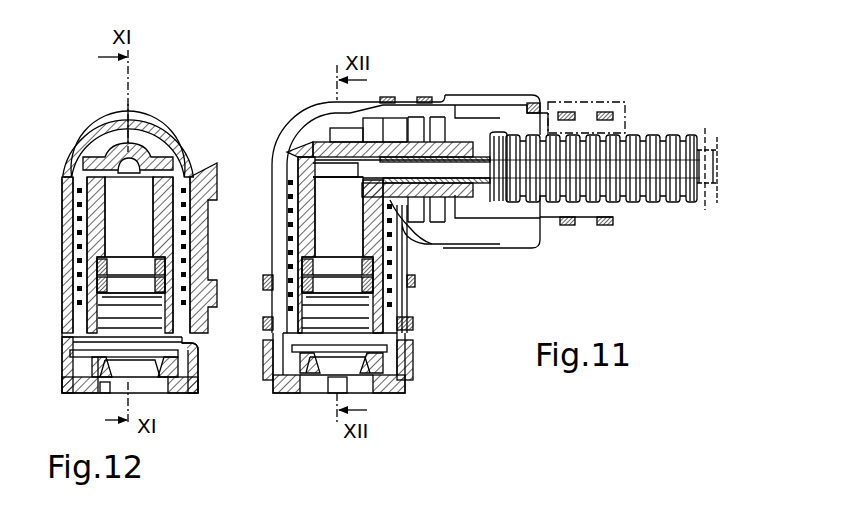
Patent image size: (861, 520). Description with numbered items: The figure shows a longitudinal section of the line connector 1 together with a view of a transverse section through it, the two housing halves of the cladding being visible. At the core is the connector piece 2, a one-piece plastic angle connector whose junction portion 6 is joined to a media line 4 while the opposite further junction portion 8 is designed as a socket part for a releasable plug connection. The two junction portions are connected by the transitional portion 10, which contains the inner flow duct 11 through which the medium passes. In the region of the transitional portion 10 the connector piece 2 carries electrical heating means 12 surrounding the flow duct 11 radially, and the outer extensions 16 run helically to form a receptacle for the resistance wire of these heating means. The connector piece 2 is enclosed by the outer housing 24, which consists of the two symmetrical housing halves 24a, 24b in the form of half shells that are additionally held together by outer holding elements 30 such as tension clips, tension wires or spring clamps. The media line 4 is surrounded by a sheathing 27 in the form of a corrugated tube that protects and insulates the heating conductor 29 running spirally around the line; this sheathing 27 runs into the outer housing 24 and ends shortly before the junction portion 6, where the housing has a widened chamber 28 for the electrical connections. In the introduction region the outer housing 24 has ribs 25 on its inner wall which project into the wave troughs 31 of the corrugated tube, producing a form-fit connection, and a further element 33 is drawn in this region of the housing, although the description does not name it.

In FIG. 12, the line connector 1 is at (187, 92).
In FIG. 11, the line connector 1 is at (453, 62).
In FIG. 12, the connector piece 2 is at (110, 150).
In FIG. 11, the connector piece 2 is at (328, 137).
In FIG. 11, the media line 4 is at (482, 186).
In FIG. 11, the junction portion 6 is at (468, 138).
In FIG. 12, the further junction portion 8 is at (204, 385).
In FIG. 11, the further junction portion 8 is at (284, 386).
In FIG. 12, the transitional portion 10 is at (190, 153).
In FIG. 11, the transitional portion 10 is at (297, 168).
In FIG. 12, the inner flow duct 11 is at (140, 230).
In FIG. 11, the inner flow duct 11 is at (253, 224).
In FIG. 12, the electrical heating means 12 is at (70, 185).
In FIG. 11, the electrical heating means 12 is at (391, 201).
In FIG. 12, the outer extensions 16 is at (203, 273).
In FIG. 11, the outer extensions 16 is at (303, 284).
In FIG. 12, the outer housing 24 is at (188, 127).
In FIG. 11, the outer housing 24 is at (467, 85).
In FIG. 12, the housing half 24a is at (148, 107).
In FIG. 11, the housing half 24a is at (400, 112).
In FIG. 12, the housing half 24b is at (107, 107).
In FIG. 11, the ribs 25 is at (604, 132).
In FIG. 11, the sheathing 27 is at (657, 192).
In FIG. 11, the widened chamber 28 is at (513, 108).
In FIG. 11, the heating conductor 29 is at (707, 148).
In FIG. 11, the outer holding elements 30 is at (388, 97).
In FIG. 11, the wave troughs 31 is at (643, 135).
In FIG. 11, the collar 33 is at (543, 103).